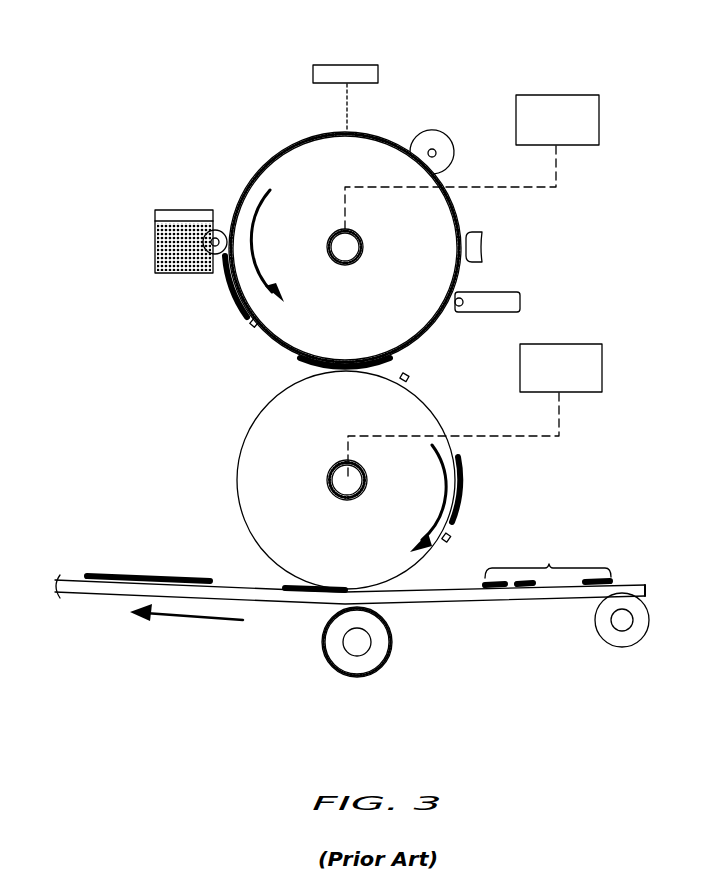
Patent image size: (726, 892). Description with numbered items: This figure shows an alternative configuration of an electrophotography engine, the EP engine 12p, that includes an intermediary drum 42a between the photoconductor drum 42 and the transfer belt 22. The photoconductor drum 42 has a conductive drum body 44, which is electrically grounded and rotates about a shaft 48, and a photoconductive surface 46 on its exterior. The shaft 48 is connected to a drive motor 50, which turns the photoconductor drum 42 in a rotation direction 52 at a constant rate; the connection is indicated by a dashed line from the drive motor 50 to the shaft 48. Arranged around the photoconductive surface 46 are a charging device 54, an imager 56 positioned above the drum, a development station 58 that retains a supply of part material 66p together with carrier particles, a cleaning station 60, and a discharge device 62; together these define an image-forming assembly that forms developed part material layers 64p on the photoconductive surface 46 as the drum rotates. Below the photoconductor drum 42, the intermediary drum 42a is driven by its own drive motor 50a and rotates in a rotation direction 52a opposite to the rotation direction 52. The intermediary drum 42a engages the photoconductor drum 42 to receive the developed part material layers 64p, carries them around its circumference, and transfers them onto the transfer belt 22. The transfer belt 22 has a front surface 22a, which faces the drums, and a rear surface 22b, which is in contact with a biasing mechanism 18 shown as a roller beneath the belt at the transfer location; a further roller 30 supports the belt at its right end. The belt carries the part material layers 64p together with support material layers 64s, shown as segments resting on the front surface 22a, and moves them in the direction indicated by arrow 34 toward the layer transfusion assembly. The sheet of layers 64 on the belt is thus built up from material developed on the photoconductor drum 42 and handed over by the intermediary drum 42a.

The EP engine 12p is at (106, 53).
The biasing mechanism 18 is at (375, 645).
The transfer belt 22 is at (62, 645).
The front surface 22a is at (642, 578).
The rear surface 22b is at (515, 600).
The roller 30 is at (626, 648).
The belt direction arrow 34 is at (185, 618).
The photoconductor drum 42 is at (235, 160).
The intermediary drum 42a is at (228, 425).
The conductive drum body 44 is at (345, 248).
The photoconductive surface 46 is at (290, 140).
The shaft 48 is at (357, 252).
The drive motor 50 is at (582, 95).
The drive motor 50a is at (596, 344).
The rotation direction 52 is at (260, 225).
The rotation direction 52a is at (410, 468).
The charging device 54 is at (428, 130).
The imager 56 is at (368, 65).
The development station 58 is at (140, 203).
The cleaning station 60 is at (510, 292).
The discharge device 62 is at (482, 235).
The sheet 64 is at (140, 558).
The part material layers 64p is at (216, 300).
The support material layers 64s is at (287, 648).
The part material 66p is at (172, 238).